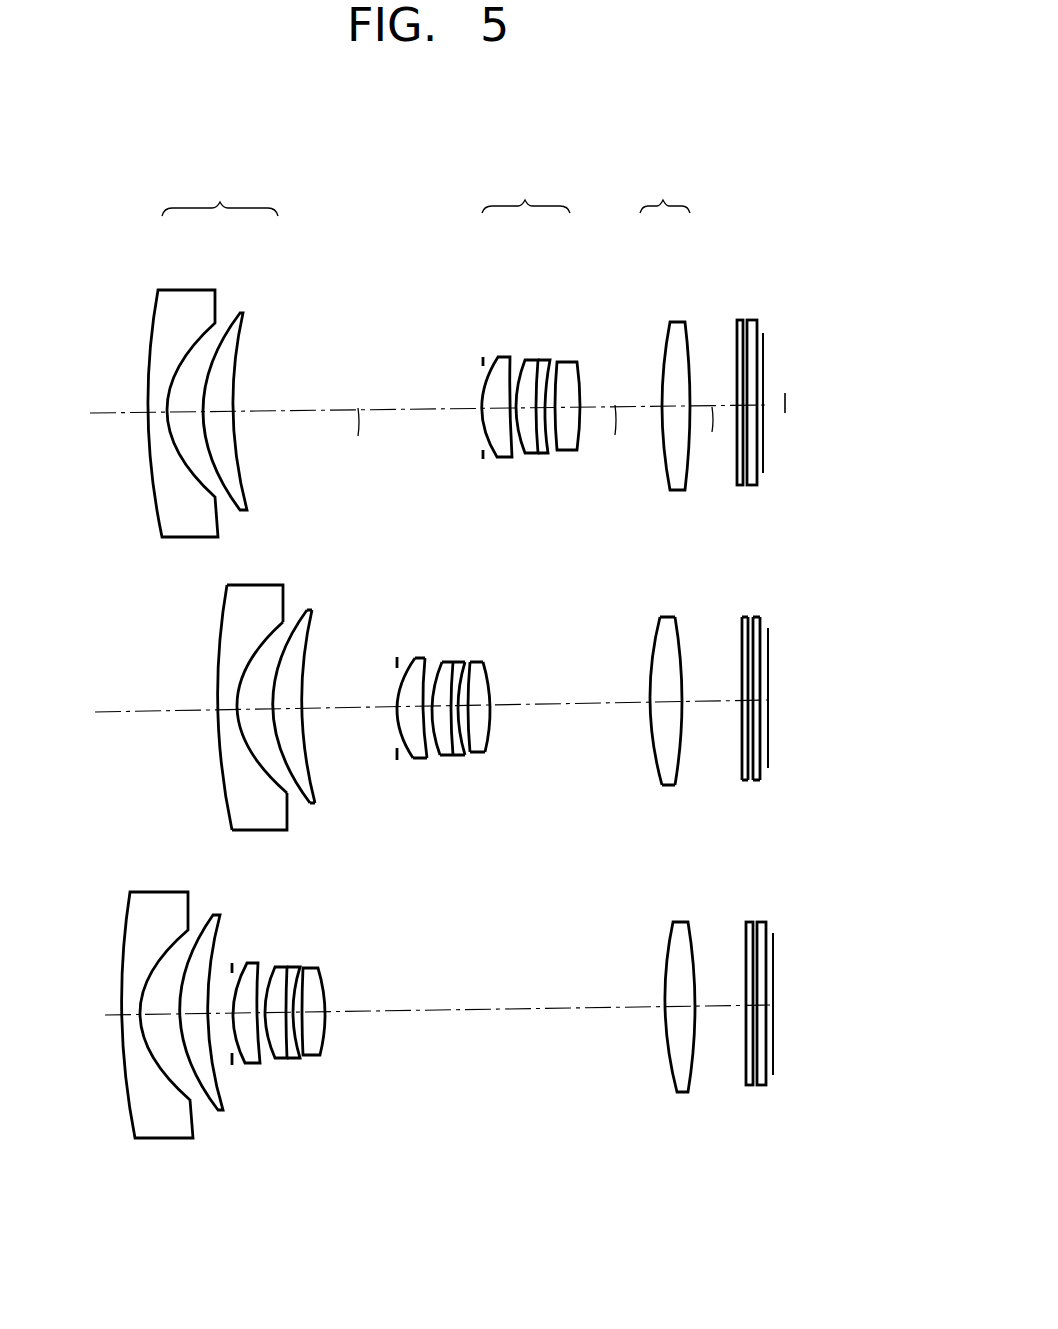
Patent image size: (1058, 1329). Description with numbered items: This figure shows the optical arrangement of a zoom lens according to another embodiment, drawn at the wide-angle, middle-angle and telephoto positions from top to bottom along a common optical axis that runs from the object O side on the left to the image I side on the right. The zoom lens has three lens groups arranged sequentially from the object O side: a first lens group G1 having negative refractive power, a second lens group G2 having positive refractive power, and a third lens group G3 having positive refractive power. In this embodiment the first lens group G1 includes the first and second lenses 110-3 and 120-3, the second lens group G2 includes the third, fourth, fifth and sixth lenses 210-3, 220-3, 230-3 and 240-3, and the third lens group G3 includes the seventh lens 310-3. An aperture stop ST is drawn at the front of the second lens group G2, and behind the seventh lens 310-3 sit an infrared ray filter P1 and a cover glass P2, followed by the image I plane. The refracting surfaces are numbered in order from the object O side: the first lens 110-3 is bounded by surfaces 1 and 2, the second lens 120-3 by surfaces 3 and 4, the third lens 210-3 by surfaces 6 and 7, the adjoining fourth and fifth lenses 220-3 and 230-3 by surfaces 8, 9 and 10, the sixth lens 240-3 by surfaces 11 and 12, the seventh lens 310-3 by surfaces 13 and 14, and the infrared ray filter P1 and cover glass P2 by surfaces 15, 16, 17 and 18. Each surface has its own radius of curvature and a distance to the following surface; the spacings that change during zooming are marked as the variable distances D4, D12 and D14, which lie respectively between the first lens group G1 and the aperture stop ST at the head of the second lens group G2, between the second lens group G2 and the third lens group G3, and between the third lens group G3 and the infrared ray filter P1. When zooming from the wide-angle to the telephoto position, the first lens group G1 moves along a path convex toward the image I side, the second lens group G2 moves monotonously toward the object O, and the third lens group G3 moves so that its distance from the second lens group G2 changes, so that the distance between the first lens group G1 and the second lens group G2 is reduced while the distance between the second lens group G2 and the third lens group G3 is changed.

The object O is at (65, 414).
The image I is at (774, 403).
The first lens group G1 is at (220, 193).
The second lens group G2 is at (526, 188).
The third lens group G3 is at (665, 188).
The first lens 110-3 is at (178, 297).
The second lens 120-3 is at (244, 311).
The third lens 210-3 is at (498, 356).
The fourth lens 220-3 is at (528, 359).
The fifth lens 230-3 is at (549, 359).
The sixth lens 240-3 is at (571, 367).
The seventh lens 310-3 is at (675, 320).
The infrared ray filter P1 is at (738, 319).
The cover glass P2 is at (752, 319).
The aperture stop ST is at (481, 362).
The variable distance D4 is at (360, 441).
The variable distance D12 is at (616, 436).
The variable distance D14 is at (712, 437).
The first surface 1 is at (220, 640).
The second surface 2 is at (238, 678).
The third surface 3 is at (292, 622).
The fourth surface 4 is at (308, 662).
The sixth surface 6 is at (407, 658).
The seventh surface 7 is at (423, 657).
The eighth surface 8 is at (435, 755).
The ninth surface 9 is at (455, 745).
The tenth surface 10 is at (467, 661).
The eleventh surface 11 is at (471, 697).
The twelfth surface 12 is at (489, 730).
The thirteenth surface 13 is at (657, 633).
The fourteenth surface 14 is at (677, 628).
The fifteenth surface 15 is at (743, 633).
The sixteenth surface 16 is at (753, 633).
The seventeenth surface 17 is at (748, 762).
The eighteenth surface 18 is at (762, 777).